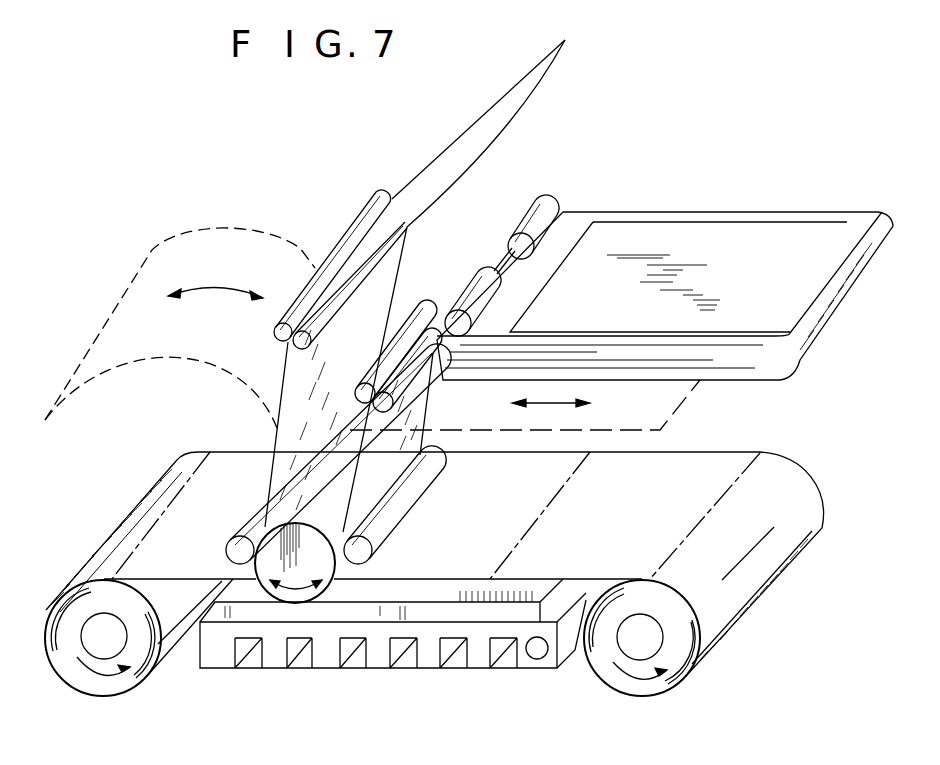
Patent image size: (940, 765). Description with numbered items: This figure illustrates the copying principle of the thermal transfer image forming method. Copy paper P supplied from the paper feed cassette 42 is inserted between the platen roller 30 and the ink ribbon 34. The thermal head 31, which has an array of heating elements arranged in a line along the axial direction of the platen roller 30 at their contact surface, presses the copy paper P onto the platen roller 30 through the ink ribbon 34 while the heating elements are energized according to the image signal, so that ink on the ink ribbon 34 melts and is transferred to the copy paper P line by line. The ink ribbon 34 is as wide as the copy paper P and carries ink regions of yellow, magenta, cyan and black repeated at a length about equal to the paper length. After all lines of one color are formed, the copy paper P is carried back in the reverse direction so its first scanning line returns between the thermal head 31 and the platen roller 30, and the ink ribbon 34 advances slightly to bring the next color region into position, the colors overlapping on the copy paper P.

The platen roller 30 is at (296, 603).
The thermal head 31 is at (218, 660).
The ink ribbon 34 is at (794, 490).
The paper feed cassette 42 is at (847, 283).
The copy paper P is at (447, 160).